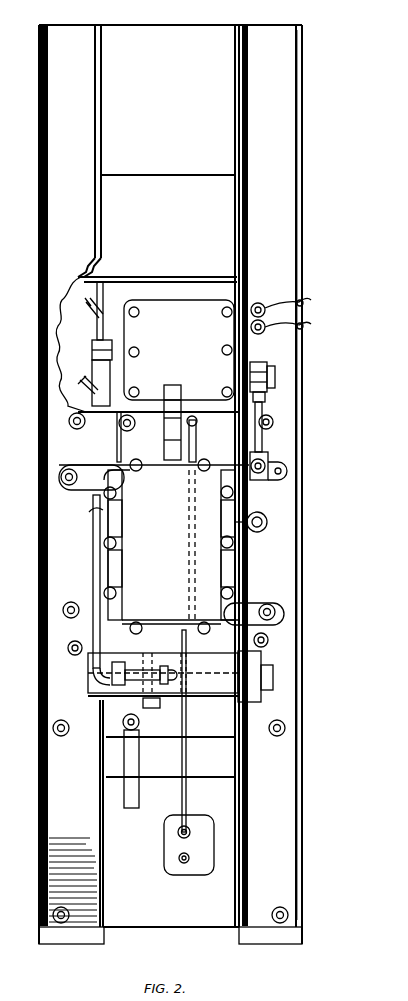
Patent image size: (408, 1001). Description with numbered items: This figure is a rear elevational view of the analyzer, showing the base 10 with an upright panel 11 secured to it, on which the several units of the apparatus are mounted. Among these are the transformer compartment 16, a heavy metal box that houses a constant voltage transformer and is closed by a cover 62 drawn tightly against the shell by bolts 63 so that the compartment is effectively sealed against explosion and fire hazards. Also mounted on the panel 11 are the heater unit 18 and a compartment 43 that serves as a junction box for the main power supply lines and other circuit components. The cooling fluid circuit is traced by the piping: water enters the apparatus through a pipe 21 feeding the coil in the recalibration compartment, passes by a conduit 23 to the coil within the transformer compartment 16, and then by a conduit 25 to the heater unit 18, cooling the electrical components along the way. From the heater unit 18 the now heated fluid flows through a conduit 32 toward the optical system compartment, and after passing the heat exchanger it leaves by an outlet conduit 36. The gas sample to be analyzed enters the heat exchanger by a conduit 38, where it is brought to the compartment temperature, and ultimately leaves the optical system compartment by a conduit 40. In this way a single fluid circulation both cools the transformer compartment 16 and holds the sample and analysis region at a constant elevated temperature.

The base 10 is at (51, 940).
The upright panel 11 is at (284, 262).
The transformer compartment 16 is at (112, 516).
The heater unit 18 is at (274, 673).
The pipe 21 is at (127, 431).
The conduit 23 is at (197, 443).
The conduit 25 is at (153, 709).
The conduit 32 is at (187, 792).
The outlet conduit 36 is at (123, 722).
The conduit 38 is at (139, 730).
The conduit 40 is at (184, 866).
The compartment 43 is at (177, 310).
The cover 62 is at (209, 565).
The bolts 63 is at (117, 542).